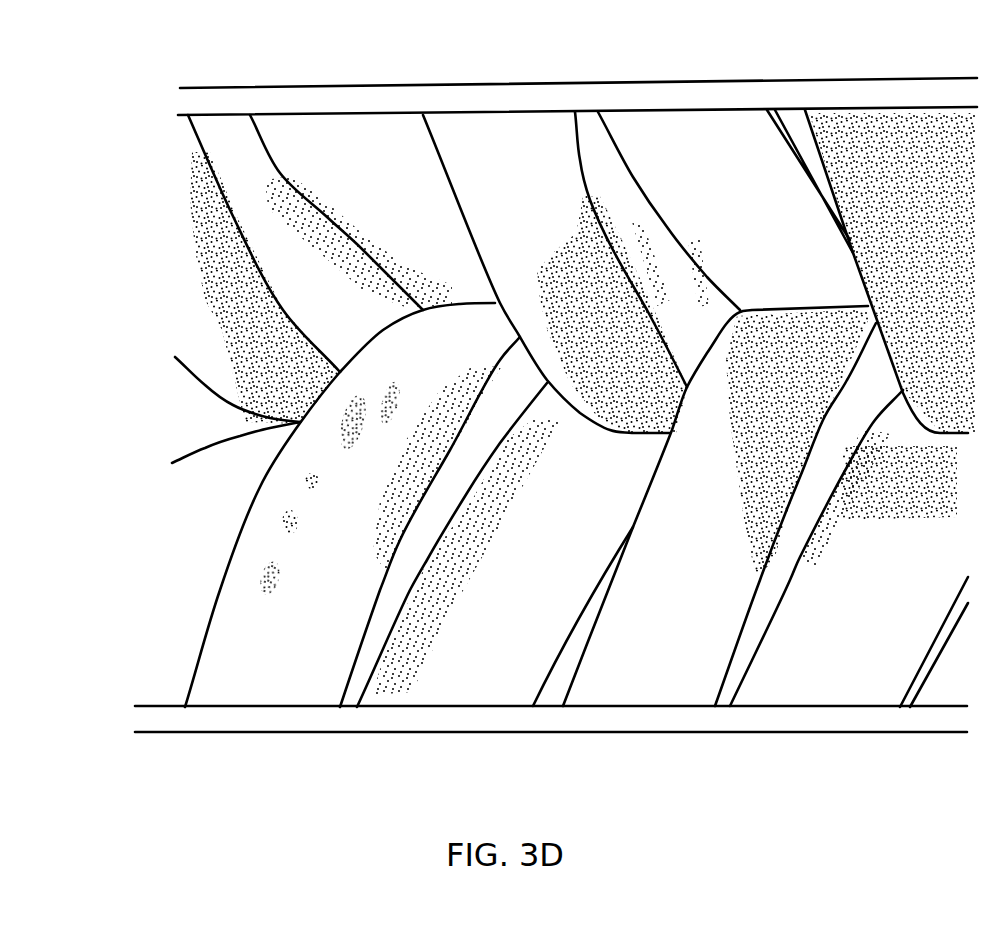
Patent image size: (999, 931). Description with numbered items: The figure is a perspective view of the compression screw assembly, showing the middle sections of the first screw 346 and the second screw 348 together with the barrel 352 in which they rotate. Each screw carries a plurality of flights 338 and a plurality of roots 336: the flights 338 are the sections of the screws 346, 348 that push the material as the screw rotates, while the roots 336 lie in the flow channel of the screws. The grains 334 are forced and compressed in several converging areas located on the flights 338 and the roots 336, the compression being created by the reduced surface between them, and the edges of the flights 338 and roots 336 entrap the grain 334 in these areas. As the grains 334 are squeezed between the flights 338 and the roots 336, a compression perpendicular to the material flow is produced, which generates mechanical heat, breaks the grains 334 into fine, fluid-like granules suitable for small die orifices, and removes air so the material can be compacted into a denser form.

The grains 334 is at (598, 263).
The roots 336 is at (375, 178).
The flights 338 is at (502, 180).
The first screw 346 is at (184, 313).
The second screw 348 is at (184, 521).
The barrel 352 is at (758, 735).